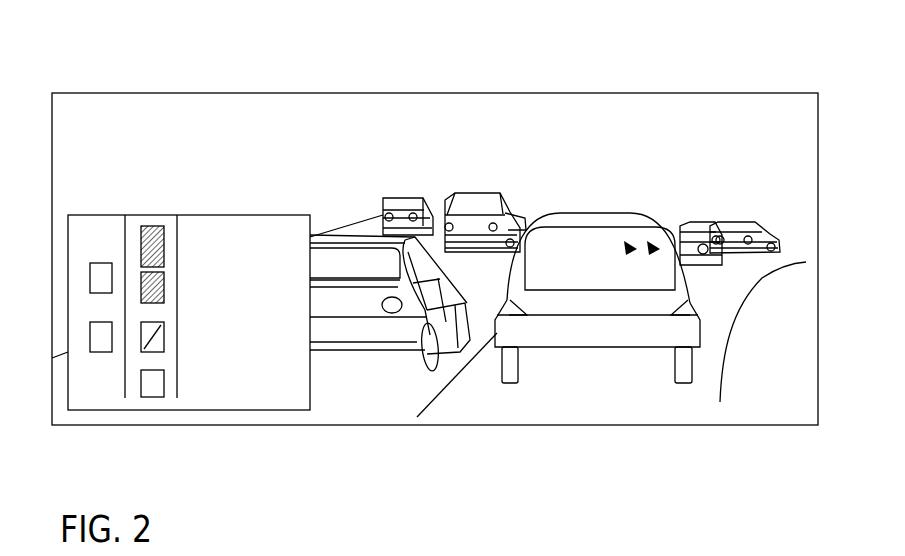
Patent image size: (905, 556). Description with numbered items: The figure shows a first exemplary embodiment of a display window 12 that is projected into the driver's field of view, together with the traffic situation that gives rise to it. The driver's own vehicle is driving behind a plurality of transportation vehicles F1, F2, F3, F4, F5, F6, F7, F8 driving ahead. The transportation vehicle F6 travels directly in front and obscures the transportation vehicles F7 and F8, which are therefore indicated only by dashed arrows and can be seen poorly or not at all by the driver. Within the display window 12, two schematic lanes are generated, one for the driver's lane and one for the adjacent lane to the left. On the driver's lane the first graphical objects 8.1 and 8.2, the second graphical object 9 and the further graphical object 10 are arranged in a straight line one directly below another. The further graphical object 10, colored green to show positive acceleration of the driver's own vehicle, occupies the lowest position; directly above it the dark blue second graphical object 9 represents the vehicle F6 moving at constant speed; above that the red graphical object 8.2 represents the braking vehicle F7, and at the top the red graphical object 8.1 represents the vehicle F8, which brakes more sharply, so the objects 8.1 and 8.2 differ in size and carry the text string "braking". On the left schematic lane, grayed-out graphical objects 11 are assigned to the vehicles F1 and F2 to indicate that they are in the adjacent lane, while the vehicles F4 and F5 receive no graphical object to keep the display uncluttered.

The first graphical object 8.1 is at (153, 226).
The first graphical object 8.2 is at (143, 300).
The second graphical object 9 is at (163, 341).
The further graphical object 10 is at (142, 397).
The graphical objects 11 is at (92, 263).
The display window 12 is at (273, 418).
The transportation vehicle F1 is at (365, 277).
The transportation vehicle F2 is at (392, 200).
The transportation vehicle F3 is at (455, 198).
The transportation vehicle F4 is at (715, 258).
The transportation vehicle F5 is at (760, 243).
The transportation vehicle F6 is at (615, 278).
The transportation vehicle F7 is at (640, 228).
The transportation vehicle F8 is at (661, 232).